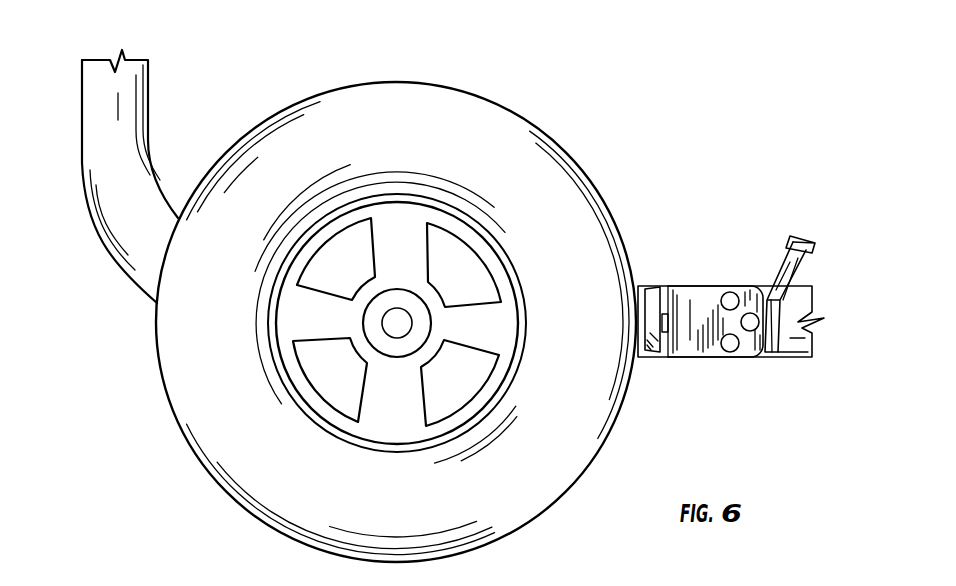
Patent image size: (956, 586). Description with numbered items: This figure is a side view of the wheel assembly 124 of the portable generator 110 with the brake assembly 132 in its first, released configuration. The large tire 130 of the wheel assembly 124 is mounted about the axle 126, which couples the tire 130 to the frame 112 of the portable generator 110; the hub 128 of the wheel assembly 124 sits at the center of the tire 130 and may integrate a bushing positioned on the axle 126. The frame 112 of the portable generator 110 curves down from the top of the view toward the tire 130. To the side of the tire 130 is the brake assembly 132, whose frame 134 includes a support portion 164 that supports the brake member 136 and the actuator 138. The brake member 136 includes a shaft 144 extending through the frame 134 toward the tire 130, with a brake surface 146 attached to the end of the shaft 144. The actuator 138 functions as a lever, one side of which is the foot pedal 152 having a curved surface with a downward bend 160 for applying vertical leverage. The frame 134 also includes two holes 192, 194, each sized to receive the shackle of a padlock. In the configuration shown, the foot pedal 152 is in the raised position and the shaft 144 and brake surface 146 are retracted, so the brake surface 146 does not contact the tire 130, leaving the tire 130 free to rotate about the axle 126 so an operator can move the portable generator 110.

The portable generator 110 is at (74, 95).
The frame 112 is at (120, 220).
The wheel assembly 124 is at (160, 443).
The axle 126 is at (398, 323).
The hub 128 is at (410, 222).
The tire 130 is at (423, 123).
The brake assembly 132 is at (704, 268).
The frame 134 is at (699, 330).
The brake member 136 is at (664, 300).
The actuator 138 is at (808, 238).
The shaft 144 is at (666, 335).
The brake surface 146 is at (634, 312).
The foot pedal 152 is at (793, 247).
The downward bend 160 is at (790, 275).
The support portion 164 is at (699, 270).
The hole 192 is at (729, 297).
The hole 194 is at (733, 348).